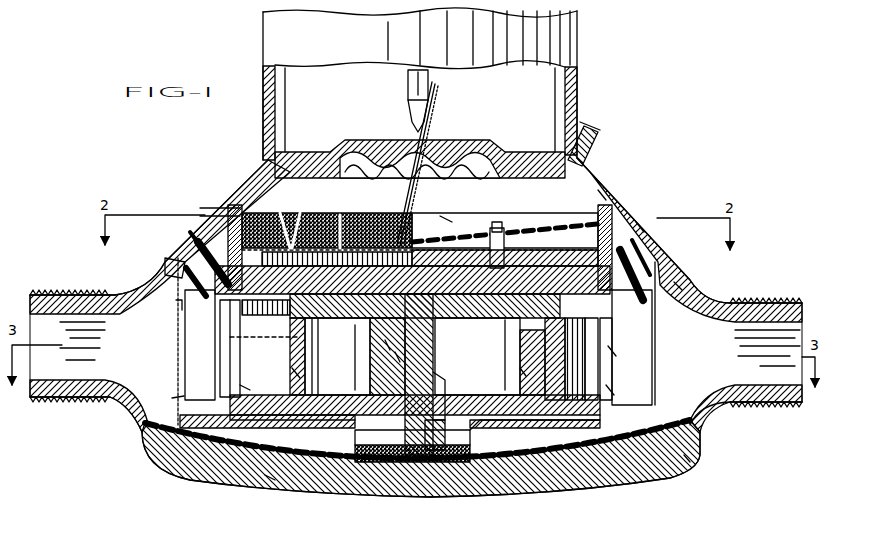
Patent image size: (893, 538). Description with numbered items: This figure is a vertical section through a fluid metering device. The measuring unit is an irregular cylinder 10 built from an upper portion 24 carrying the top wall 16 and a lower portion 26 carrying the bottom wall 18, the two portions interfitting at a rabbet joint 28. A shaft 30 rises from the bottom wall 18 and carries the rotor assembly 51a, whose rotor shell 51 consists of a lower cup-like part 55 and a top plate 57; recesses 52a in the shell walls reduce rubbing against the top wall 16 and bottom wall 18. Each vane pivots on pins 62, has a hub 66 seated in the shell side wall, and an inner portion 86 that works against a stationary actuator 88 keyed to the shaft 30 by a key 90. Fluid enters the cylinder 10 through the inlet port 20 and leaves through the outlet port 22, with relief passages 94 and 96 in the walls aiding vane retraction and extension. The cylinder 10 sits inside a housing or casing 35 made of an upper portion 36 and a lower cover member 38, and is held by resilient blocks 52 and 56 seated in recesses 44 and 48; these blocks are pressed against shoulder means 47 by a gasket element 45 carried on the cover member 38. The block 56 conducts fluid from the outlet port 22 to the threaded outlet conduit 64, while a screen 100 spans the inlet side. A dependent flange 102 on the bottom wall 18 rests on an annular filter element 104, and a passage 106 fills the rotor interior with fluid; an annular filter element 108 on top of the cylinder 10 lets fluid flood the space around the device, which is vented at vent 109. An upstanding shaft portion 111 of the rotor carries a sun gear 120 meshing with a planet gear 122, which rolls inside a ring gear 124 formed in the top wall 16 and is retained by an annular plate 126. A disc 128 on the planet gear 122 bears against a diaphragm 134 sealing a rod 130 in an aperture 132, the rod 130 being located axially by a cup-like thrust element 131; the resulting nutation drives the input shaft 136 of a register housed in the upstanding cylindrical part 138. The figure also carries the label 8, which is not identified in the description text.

The irregular cylinder 10 is at (228, 462).
The upstanding cylindrical part 138 is at (572, 40).
The input shaft 136 is at (408, 92).
The diaphragm 134 is at (470, 152).
The rod 130 is at (428, 118).
The aperture 132 is at (438, 148).
The vent 109 is at (590, 128).
The annular plate 126 is at (252, 205).
The ring gear 124 is at (292, 235).
The upstanding shaft portion 111 is at (347, 232).
The pinion or sun gear 120 is at (392, 235).
The cup-like thrust element 131 is at (445, 214).
The planet gear 122 is at (462, 240).
The disc 128 is at (535, 232).
The top wall 16 is at (286, 298).
The top plate 57 is at (290, 316).
The rotor shell 51 is at (290, 331).
The shaft 30 is at (334, 346).
The rotor assembly 51a is at (385, 345).
The actuator 88 is at (395, 357).
The lower cup-like part 55 is at (292, 373).
The bottom wall 18 is at (292, 396).
The stem 8 is at (447, 330).
The inner portion 86 is at (490, 356).
The recesses 52a is at (500, 333).
The hub 66 is at (542, 345).
The pins 62 is at (522, 372).
The passage 106 is at (425, 418).
The annular dependent flange 102 is at (478, 440).
The annular filter element 104 is at (475, 478).
The key 90 is at (345, 412).
The gasket element 45 is at (268, 478).
The lower cover member 38 is at (688, 458).
The threaded outlet conduit 64 is at (748, 402).
The annular filter element 108 is at (212, 230).
The shoulder means 47 is at (195, 245).
The recess 44 is at (168, 268).
The screen 100 is at (178, 335).
The resilient block 52 is at (176, 310).
The upper portion 24 is at (200, 345).
The inlet port 20 is at (230, 380).
The measuring vane extension relief passages 96 is at (245, 385).
The lower portion 26 is at (178, 395).
The resilient block 56 is at (640, 318).
The rabbet joint 28 is at (612, 352).
The measuring vane retraction relief passage 94 is at (605, 388).
The outlet port 22 is at (610, 390).
The housing or casing 35 is at (602, 198).
The upper portion 36 is at (640, 228).
The recess 48 is at (678, 285).